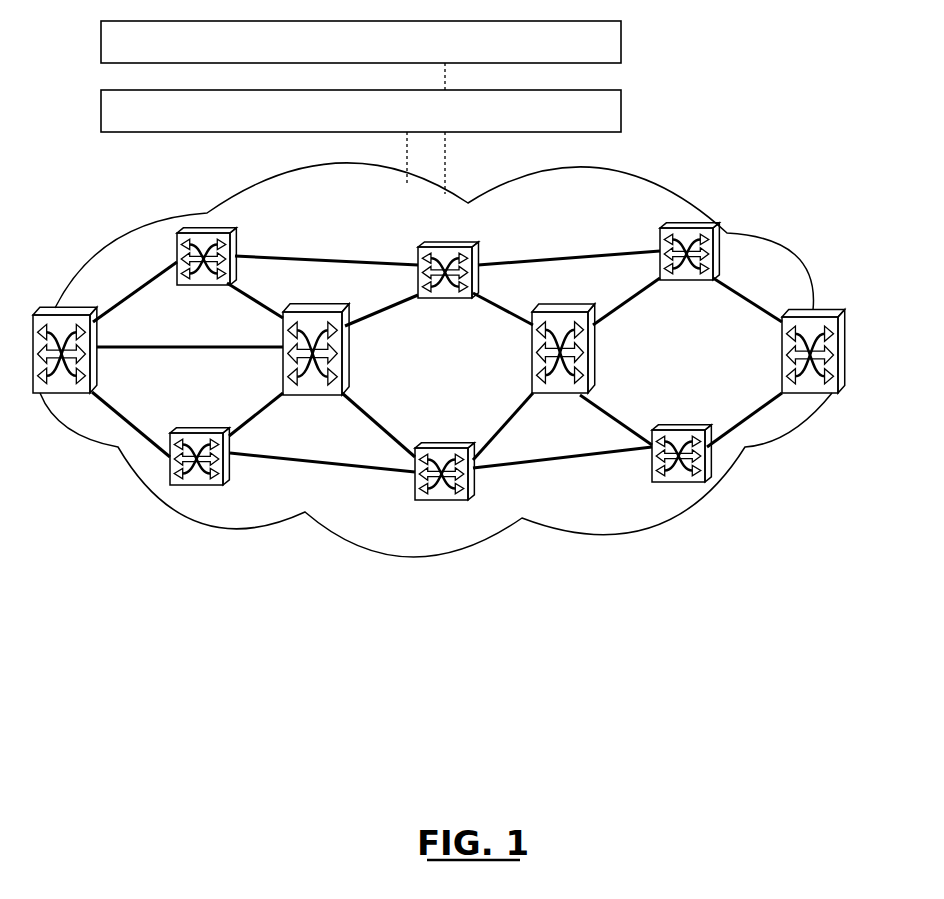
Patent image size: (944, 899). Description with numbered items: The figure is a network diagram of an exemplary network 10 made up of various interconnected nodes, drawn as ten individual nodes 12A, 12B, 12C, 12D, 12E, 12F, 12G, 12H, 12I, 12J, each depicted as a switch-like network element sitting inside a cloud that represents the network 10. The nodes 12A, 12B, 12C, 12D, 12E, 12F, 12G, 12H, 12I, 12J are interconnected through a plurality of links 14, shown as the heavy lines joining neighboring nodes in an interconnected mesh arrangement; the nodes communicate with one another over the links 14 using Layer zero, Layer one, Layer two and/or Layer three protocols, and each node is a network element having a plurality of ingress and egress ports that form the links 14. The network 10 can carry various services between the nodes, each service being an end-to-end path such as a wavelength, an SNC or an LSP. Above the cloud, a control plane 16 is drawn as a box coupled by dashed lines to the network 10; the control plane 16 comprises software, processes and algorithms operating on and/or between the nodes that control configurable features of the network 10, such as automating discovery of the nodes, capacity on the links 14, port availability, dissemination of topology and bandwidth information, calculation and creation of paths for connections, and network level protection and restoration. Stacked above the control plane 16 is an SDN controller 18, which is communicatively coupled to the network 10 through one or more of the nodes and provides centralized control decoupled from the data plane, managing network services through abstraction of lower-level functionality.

The network 10 is at (768, 60).
The node 12A is at (98, 350).
The node 12B is at (350, 352).
The node 12C is at (597, 355).
The node 12D is at (822, 313).
The node 12E is at (215, 230).
The node 12F is at (472, 245).
The node 12G is at (697, 228).
The node 12H is at (197, 430).
The node 12I is at (430, 442).
The node 12J is at (663, 425).
The links 14 is at (318, 258).
The control plane 16 is at (621, 113).
The SDN controller 18 is at (621, 45).